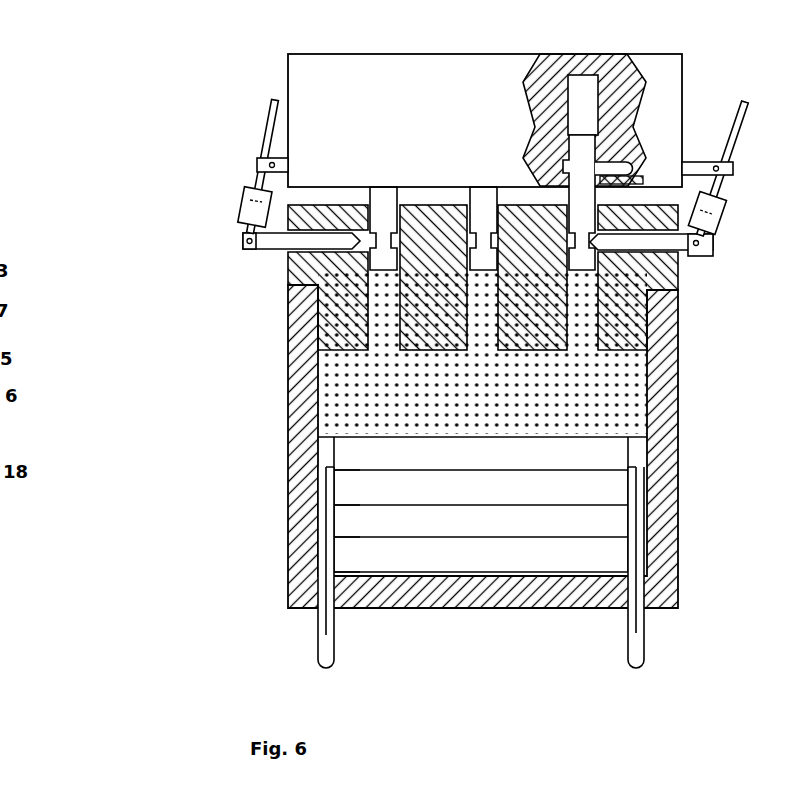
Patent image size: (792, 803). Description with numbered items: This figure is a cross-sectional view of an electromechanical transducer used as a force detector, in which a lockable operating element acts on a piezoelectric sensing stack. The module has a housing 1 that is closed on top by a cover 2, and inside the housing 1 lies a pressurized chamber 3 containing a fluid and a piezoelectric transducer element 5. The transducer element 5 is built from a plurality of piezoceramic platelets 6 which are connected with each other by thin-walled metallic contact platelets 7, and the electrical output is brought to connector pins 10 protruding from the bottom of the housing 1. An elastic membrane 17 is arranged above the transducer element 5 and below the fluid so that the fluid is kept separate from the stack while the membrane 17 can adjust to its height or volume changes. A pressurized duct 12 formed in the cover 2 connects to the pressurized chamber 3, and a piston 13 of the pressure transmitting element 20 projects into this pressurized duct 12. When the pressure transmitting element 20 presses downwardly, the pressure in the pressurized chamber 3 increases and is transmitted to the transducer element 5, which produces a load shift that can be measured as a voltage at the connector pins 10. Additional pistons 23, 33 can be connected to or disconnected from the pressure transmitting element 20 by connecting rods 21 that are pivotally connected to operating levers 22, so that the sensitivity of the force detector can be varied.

The housing 1 is at (295, 430).
The cover 2 is at (630, 342).
The pressurized chamber 3 is at (610, 404).
The piezoelectric transducer element 5 is at (612, 562).
The piezoceramic platelets 6 is at (588, 557).
The contact platelets 7 is at (383, 570).
The connector pins 10 is at (637, 647).
The pressurized duct 12 is at (485, 287).
The piston 13 is at (485, 252).
The membrane 17 is at (627, 432).
The pressure transmitting element 20 is at (330, 86).
The connecting rods 21 is at (628, 242).
The operating levers 22 is at (268, 122).
The additional piston 23 is at (385, 258).
The additional piston 33 is at (580, 258).